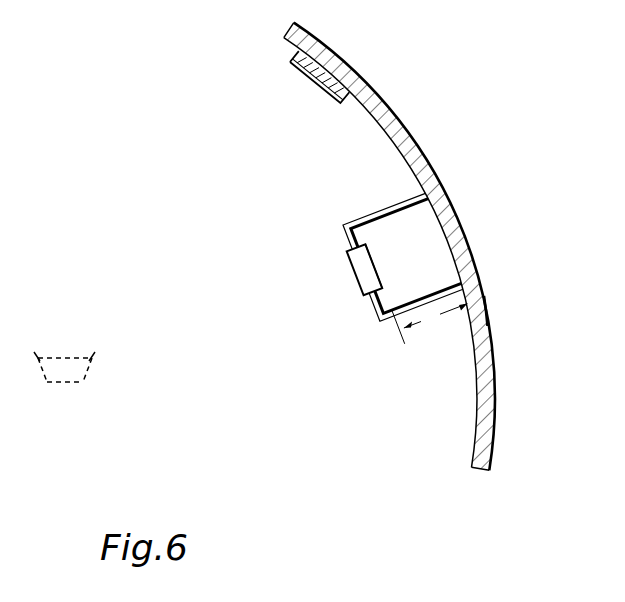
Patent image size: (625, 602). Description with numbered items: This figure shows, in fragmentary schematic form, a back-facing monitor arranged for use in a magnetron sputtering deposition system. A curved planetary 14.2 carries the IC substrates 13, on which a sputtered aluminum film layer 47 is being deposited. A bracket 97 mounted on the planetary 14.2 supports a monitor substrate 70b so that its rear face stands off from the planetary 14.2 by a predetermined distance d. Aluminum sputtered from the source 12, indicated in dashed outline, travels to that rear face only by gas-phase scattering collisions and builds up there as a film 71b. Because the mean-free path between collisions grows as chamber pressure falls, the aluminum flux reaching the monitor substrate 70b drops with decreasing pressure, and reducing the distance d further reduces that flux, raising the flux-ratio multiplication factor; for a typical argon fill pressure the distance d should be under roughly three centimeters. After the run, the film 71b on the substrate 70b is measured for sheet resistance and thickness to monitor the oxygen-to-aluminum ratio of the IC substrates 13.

The IC substrates 13 is at (305, 58).
The planetary 14.2 is at (486, 311).
The aluminum film layer 47 is at (320, 83).
The bracket 97 is at (367, 216).
The substrate 70b is at (355, 275).
The film 71b is at (375, 278).
The distance d is at (430, 324).
The source 12 is at (85, 381).